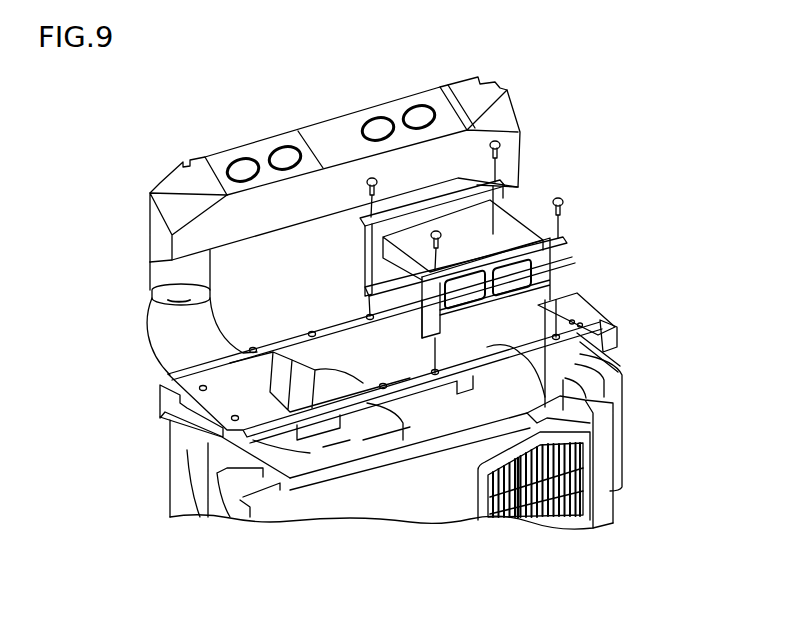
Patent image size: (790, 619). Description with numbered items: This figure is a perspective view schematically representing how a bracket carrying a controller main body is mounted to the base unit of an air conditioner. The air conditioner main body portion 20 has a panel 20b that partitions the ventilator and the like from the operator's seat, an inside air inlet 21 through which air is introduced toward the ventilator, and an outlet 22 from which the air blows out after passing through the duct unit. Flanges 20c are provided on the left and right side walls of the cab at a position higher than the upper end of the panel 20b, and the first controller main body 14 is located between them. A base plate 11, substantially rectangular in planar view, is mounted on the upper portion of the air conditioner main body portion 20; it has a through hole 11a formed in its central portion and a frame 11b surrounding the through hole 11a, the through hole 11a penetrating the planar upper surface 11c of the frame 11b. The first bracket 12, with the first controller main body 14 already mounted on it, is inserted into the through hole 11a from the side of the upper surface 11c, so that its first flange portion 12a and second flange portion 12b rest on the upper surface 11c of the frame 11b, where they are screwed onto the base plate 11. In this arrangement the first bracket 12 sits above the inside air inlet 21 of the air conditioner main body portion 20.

The outlet 22 is at (416, 112).
The first flange portion 12a is at (477, 187).
The first controller main body 14 is at (510, 230).
The first bracket 12 is at (563, 269).
The base plate 11 is at (568, 313).
The flanges 20c is at (173, 408).
The upper surface 11c is at (556, 347).
The through hole 11a is at (623, 375).
The frame 11b is at (560, 399).
The air conditioner main body portion 20 is at (605, 490).
The panel 20b is at (417, 490).
The inside air inlet 21 is at (537, 490).
The second flange portion 12b is at (468, 262).